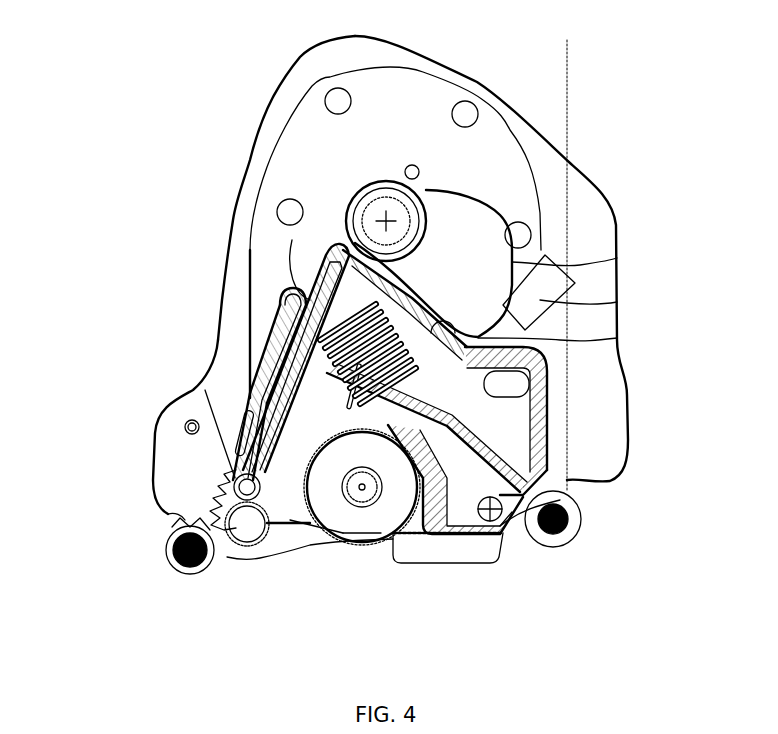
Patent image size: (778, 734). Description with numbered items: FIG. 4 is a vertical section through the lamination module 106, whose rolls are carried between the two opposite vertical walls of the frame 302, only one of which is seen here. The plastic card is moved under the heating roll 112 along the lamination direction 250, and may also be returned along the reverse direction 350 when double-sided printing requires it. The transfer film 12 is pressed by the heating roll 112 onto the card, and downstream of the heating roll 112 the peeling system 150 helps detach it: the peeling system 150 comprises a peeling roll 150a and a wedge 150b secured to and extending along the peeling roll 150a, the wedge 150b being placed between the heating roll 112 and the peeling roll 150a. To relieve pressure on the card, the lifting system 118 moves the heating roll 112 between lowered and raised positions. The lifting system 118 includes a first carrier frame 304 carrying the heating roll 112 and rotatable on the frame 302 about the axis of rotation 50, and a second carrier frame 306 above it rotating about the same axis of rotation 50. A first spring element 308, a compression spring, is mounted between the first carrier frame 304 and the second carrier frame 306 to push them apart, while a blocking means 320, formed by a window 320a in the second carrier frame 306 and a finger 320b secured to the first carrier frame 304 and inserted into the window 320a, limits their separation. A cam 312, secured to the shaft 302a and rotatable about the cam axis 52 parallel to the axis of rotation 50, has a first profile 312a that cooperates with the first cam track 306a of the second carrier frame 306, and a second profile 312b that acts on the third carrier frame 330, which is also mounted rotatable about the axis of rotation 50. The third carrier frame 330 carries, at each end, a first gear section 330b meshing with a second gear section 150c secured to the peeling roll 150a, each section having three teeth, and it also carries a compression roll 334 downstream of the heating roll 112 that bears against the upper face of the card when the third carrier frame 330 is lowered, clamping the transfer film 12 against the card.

The transfer film 12 is at (568, 62).
The axis of rotation 50 is at (560, 472).
The cam axis 52 is at (384, 220).
The lamination module 106 is at (670, 102).
The heating roll 112 is at (362, 487).
The lifting system 118 is at (577, 165).
The peeling system 150 is at (100, 503).
The peeling roll 150a is at (165, 547).
The wedge 150b is at (218, 545).
The second gear section 150c is at (170, 520).
The lamination direction 250 is at (757, 223).
The frame 302 is at (303, 58).
The shaft 302a is at (350, 187).
The first carrier frame 304 is at (462, 535).
The second carrier frame 306 is at (560, 428).
The first cam track 306a is at (600, 340).
The first spring element 308 is at (330, 333).
The cam 312 is at (468, 92).
The first profile 312a is at (575, 304).
The second profile 312b is at (605, 261).
The blocking means 320 is at (102, 286).
The window 320a is at (298, 293).
The finger 320b is at (258, 360).
The third carrier frame 330 is at (200, 396).
The first gear section 330b is at (215, 482).
The compression roll 334 is at (248, 527).
The reverse direction 350 is at (757, 169).